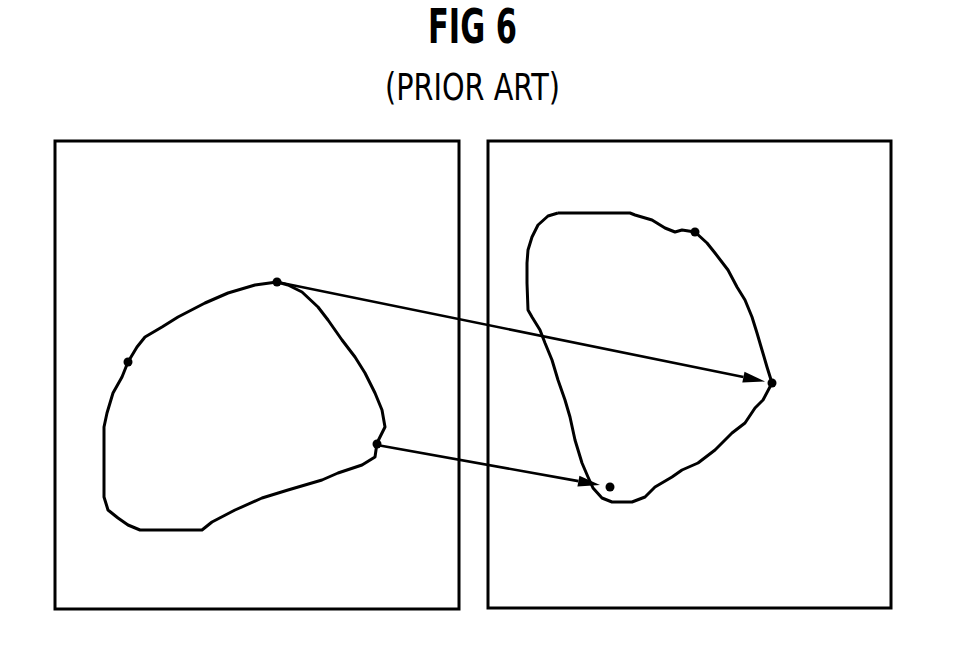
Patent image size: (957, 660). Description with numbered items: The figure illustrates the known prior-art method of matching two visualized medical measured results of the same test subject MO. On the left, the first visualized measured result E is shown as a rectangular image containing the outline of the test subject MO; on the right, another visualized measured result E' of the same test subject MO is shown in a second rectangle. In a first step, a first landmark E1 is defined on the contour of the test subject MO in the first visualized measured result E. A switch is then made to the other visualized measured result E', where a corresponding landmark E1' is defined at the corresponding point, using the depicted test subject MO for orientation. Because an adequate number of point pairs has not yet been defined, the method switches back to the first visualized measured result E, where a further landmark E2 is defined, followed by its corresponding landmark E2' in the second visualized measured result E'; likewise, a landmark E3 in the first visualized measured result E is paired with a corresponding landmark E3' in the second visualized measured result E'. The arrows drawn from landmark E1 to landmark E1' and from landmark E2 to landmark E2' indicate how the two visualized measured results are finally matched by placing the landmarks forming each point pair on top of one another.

The first visualized measured result E is at (257, 375).
The second visualized measured result E' is at (689, 374).
The test subject MO is at (262, 500).
The first landmark E1 is at (266, 249).
The further landmark E2 is at (345, 441).
The landmark E3 is at (145, 393).
The corresponding landmark E1' is at (808, 391).
The corresponding landmark E2' is at (625, 452).
The corresponding landmark E3' is at (718, 206).